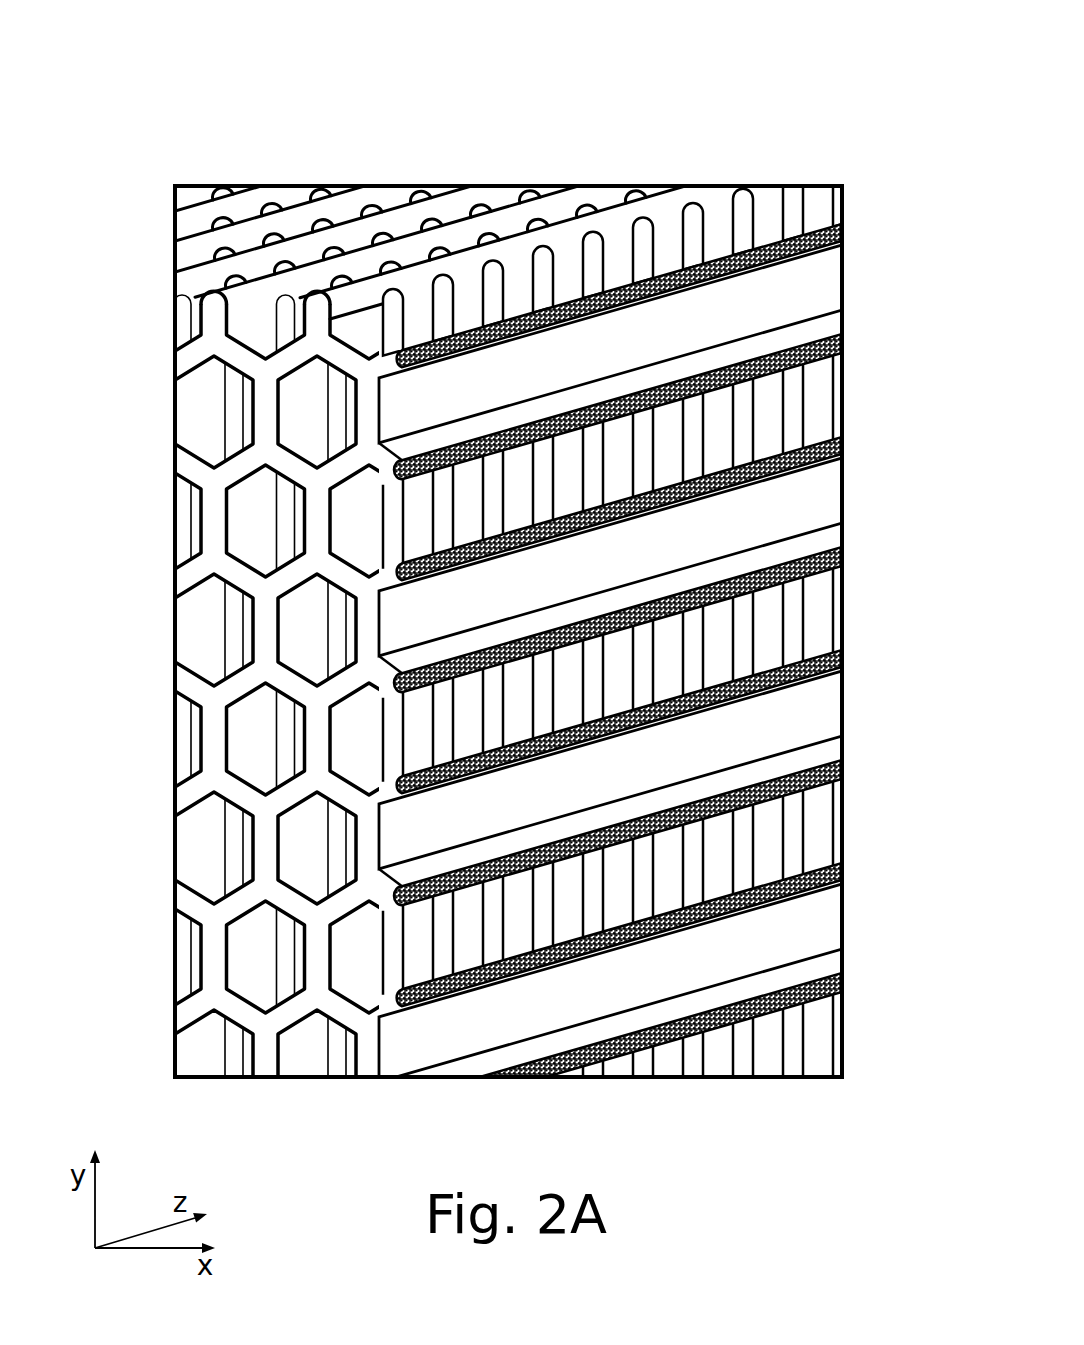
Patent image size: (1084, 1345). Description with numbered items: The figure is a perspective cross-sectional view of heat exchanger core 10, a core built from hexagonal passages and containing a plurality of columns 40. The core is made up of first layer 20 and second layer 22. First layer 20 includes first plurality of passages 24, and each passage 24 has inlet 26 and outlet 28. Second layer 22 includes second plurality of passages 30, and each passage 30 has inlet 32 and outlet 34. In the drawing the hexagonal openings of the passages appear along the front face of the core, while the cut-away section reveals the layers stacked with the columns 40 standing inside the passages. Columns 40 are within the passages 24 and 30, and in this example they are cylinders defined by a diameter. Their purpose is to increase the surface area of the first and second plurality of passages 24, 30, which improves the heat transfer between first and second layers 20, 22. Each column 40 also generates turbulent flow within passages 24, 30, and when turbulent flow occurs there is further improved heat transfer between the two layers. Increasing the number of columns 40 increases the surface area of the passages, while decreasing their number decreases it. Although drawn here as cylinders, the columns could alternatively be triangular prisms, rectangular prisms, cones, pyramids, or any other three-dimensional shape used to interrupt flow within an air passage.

The heat exchanger core 10 is at (840, 98).
The first layer 20 is at (807, 290).
The second layer 22 is at (813, 385).
The first plurality of passages 24 is at (306, 413).
The inlet 26 is at (190, 398).
The outlet 28 is at (822, 251).
The second plurality of passages 30 is at (185, 497).
The inlet 32 is at (280, 541).
The outlet 34 is at (833, 415).
The columns 40 is at (743, 637).